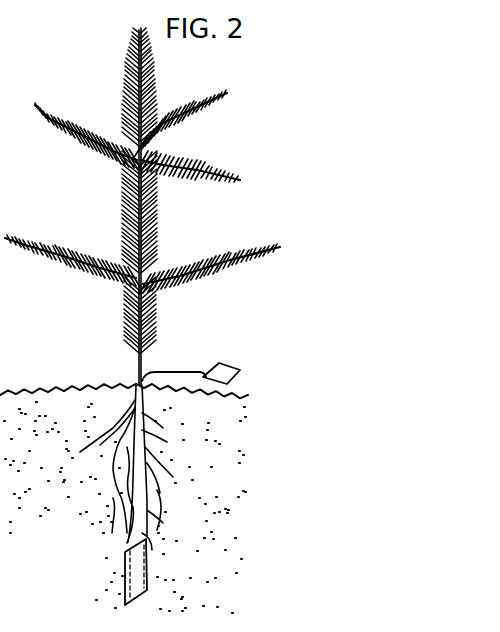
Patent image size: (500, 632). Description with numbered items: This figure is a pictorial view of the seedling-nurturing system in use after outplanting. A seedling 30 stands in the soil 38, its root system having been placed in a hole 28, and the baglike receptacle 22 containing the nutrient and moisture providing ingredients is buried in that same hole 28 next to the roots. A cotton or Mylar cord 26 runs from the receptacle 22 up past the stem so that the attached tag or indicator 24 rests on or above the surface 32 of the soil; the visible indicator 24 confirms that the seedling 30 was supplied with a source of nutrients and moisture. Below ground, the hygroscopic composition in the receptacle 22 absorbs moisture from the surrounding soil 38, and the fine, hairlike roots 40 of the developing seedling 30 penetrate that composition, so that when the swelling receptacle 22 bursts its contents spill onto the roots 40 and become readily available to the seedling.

The receptacle 22 is at (104, 579).
The indicator 24 is at (218, 363).
The cord 26 is at (173, 372).
The hole 28 is at (117, 424).
The seedling 30 is at (94, 321).
The surface 32 is at (65, 388).
The soil 38 is at (205, 403).
The roots 40 is at (113, 498).